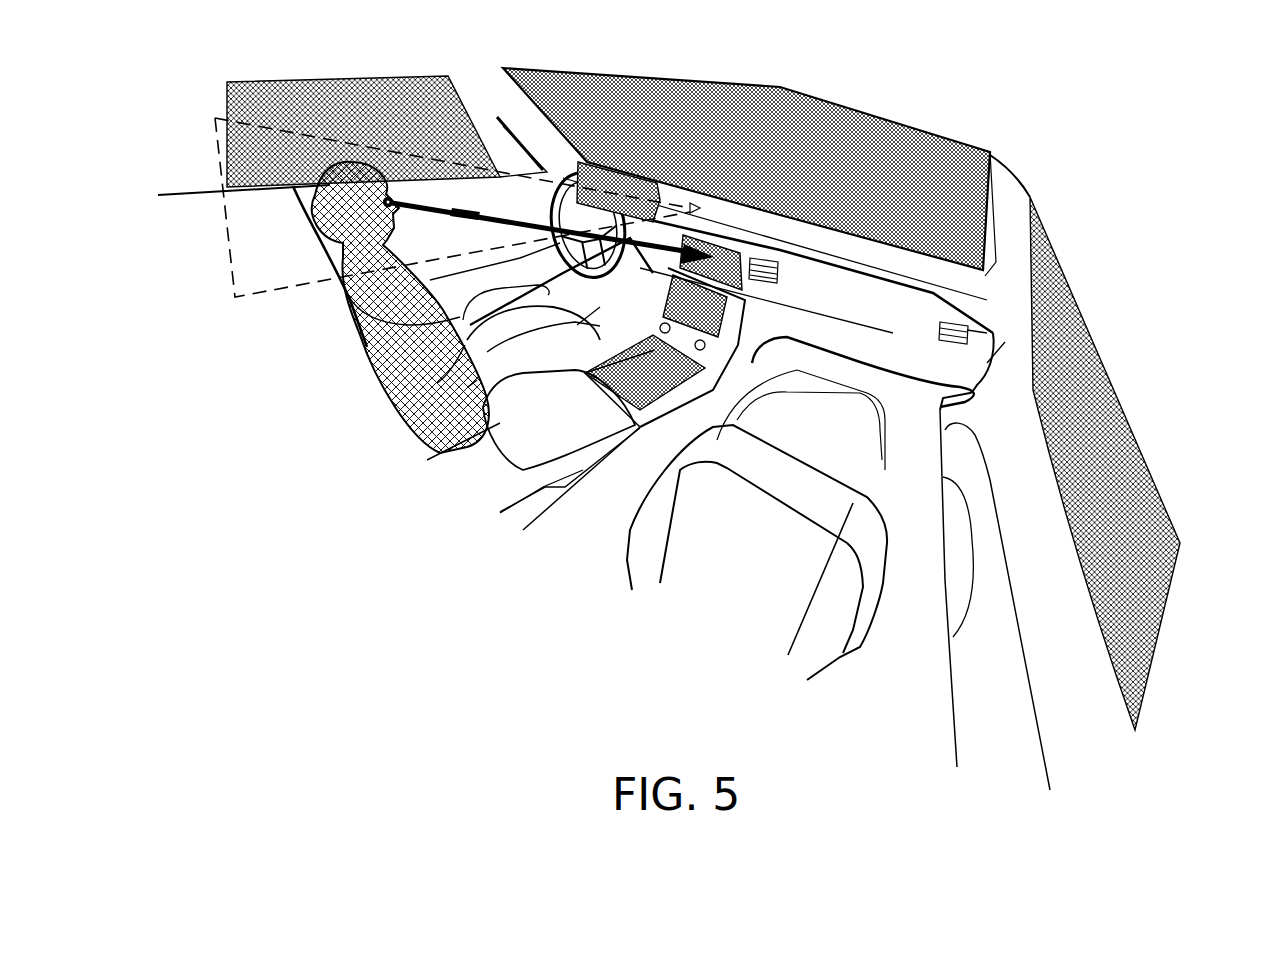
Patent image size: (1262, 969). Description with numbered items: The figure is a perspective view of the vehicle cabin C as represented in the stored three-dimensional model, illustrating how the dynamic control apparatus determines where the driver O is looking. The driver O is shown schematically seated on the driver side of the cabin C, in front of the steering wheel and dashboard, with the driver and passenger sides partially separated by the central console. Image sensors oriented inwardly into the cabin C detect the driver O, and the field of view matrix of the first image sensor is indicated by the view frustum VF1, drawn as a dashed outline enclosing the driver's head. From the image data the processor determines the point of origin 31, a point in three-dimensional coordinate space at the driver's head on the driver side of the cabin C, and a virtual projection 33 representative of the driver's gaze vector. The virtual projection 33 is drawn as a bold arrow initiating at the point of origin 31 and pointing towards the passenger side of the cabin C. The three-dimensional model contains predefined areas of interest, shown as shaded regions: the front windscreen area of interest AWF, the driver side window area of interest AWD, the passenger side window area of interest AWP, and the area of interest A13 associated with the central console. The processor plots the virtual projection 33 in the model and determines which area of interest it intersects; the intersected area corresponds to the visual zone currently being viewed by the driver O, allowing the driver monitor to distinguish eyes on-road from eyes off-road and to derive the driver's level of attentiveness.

The point of origin 31 is at (386, 198).
The virtual projection 33 is at (523, 222).
The driver side window area of interest AWD is at (267, 107).
The front windscreen area of interest AWF is at (903, 133).
The passenger side window area of interest AWP is at (1073, 317).
The central console area of interest A13 is at (733, 253).
The cabin C is at (1046, 177).
The driver O is at (352, 378).
The view frustum VF1 is at (243, 245).